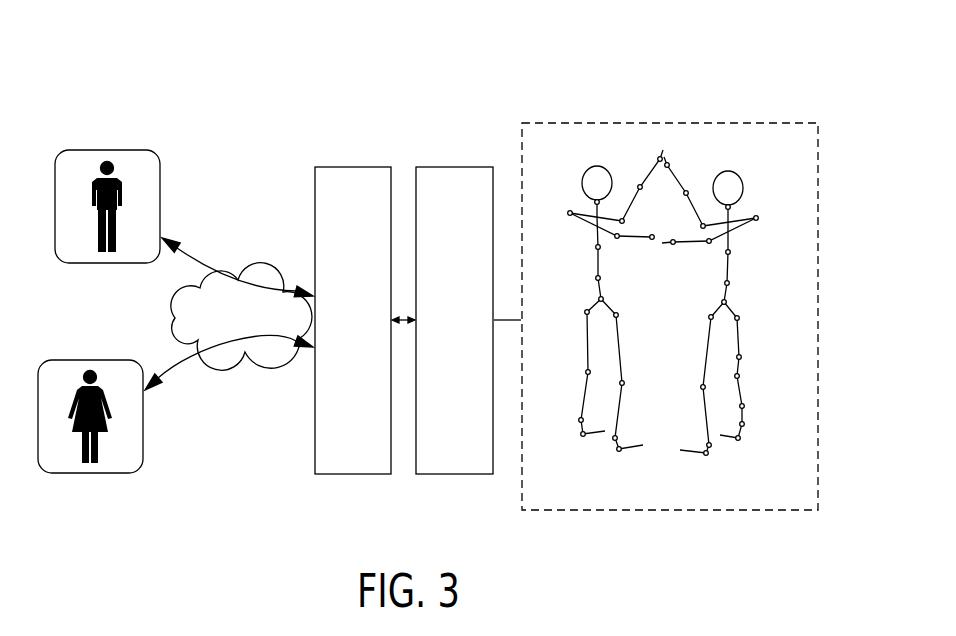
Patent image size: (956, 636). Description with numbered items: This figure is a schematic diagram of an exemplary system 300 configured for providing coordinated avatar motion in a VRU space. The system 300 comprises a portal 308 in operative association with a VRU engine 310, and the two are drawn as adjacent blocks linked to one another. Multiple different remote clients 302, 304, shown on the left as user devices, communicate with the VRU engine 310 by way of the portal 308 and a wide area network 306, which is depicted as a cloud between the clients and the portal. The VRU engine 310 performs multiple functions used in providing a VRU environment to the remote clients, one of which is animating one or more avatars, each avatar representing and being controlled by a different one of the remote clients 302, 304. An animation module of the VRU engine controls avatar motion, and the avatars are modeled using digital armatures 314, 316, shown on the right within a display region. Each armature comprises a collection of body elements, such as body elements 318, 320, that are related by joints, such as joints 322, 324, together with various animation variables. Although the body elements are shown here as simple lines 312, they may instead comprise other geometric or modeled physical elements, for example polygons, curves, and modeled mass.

The system 300 is at (474, 122).
The remote client 302 is at (130, 150).
The remote client 304 is at (92, 360).
The network 306 is at (267, 283).
The portal 308 is at (360, 474).
The VRU engine 310 is at (445, 474).
The simple lines 312 is at (632, 123).
The digital armature 314 is at (623, 477).
The digital armature 316 is at (763, 368).
The body element 318 is at (741, 356).
The body element 320 is at (744, 405).
The joint 322 is at (739, 376).
The joint 324 is at (741, 318).